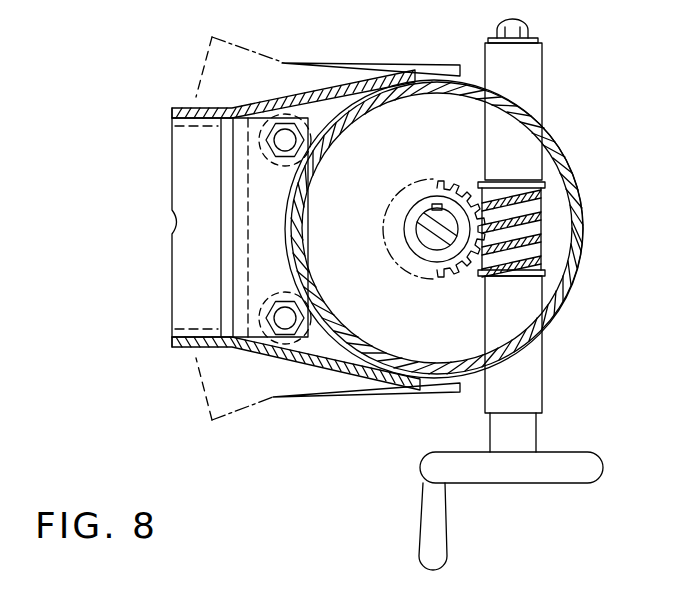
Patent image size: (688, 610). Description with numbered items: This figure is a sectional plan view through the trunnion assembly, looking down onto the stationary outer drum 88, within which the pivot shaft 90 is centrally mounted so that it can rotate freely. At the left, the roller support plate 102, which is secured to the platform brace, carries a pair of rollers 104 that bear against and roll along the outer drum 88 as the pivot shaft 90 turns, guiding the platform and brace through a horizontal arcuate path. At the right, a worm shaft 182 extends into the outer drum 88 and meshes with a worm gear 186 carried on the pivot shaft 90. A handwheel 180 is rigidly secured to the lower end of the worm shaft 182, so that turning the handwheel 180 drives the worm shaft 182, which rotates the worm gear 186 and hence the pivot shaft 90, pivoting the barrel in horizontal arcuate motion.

The outer drum 88 is at (437, 372).
The pivot shaft 90 is at (428, 243).
The roller support plate 102 is at (260, 190).
The rollers 104 is at (318, 132).
The handwheel 180 is at (512, 474).
The worm shaft 182 is at (540, 230).
The worm gear 186 is at (450, 278).